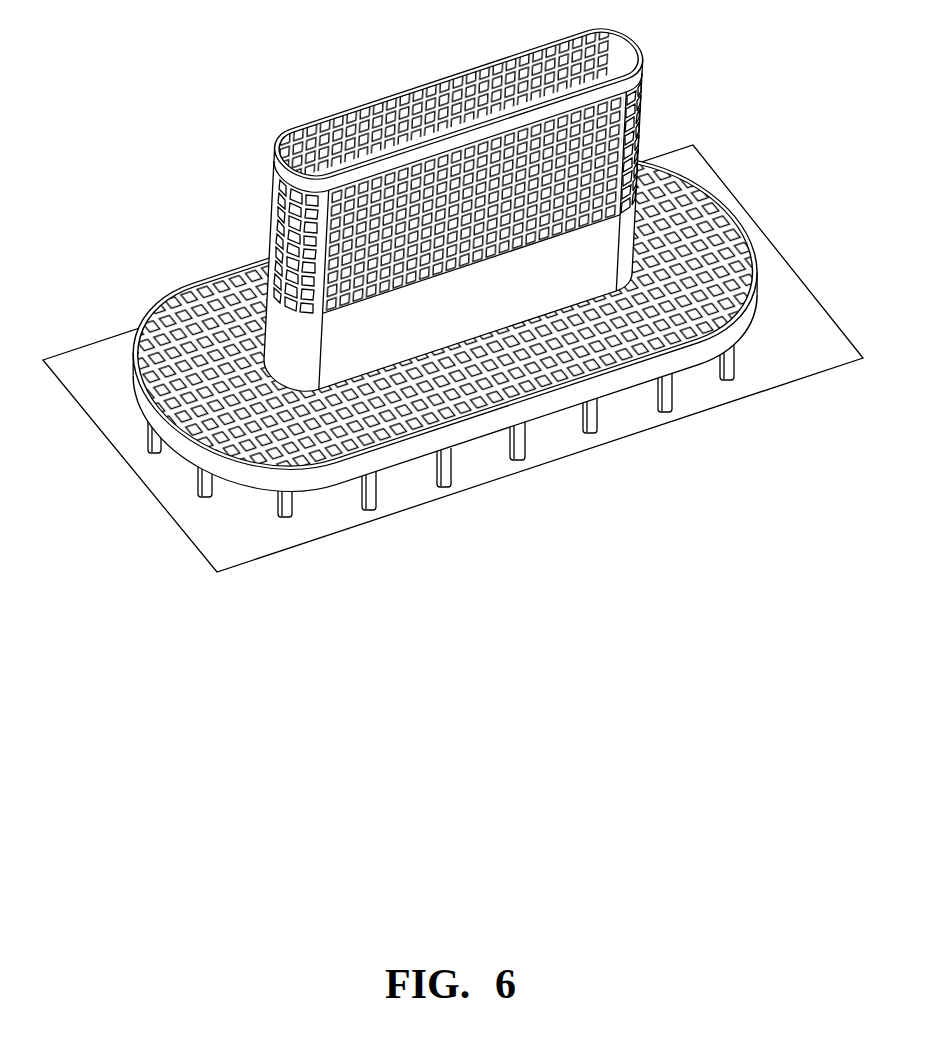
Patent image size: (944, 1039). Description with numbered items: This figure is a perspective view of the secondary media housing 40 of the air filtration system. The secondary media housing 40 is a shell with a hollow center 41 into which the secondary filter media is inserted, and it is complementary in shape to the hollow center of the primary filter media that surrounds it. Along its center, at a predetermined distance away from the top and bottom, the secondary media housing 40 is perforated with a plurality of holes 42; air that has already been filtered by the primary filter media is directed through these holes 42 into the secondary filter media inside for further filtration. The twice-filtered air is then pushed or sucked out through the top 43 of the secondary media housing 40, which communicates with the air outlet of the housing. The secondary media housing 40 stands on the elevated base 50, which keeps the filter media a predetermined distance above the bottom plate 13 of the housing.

The bottom plate 13 is at (238, 533).
The secondary media housing 40 is at (451, 323).
The hollow center 41 is at (543, 63).
The holes 42 is at (268, 257).
The top 43 is at (367, 110).
The elevated base 50 is at (170, 433).